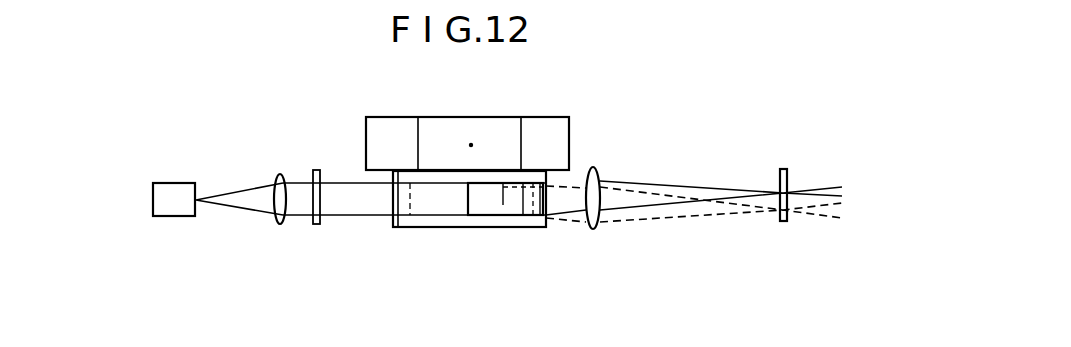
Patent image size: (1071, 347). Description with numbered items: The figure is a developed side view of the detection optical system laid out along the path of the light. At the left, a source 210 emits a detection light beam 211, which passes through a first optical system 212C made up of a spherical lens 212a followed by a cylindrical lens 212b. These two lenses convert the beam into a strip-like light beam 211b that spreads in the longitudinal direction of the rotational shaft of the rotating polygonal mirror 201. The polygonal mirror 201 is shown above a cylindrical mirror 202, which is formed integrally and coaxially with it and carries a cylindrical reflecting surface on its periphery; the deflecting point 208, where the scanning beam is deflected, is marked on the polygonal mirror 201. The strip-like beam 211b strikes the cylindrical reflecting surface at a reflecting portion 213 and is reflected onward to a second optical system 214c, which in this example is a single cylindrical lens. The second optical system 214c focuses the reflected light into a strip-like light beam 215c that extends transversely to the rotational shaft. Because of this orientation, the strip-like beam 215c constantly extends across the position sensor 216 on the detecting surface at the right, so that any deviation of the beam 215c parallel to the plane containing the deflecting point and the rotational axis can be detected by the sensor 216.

The rotating polygonal mirror 201 is at (560, 117).
The cylindrical mirror 202 is at (420, 224).
The deflecting point 208 is at (471, 145).
The source 210 is at (167, 217).
The detection light beam 211 is at (238, 205).
The strip-like light beam 211b is at (343, 182).
The spherical lens 212a is at (281, 225).
The cylindrical lens 212b is at (323, 229).
The first optical system 212C is at (289, 249).
The reflecting portion 213 is at (468, 202).
The second optical system 214c is at (593, 230).
The strip-like light beam 215c is at (780, 190).
The position sensor 216 is at (788, 171).